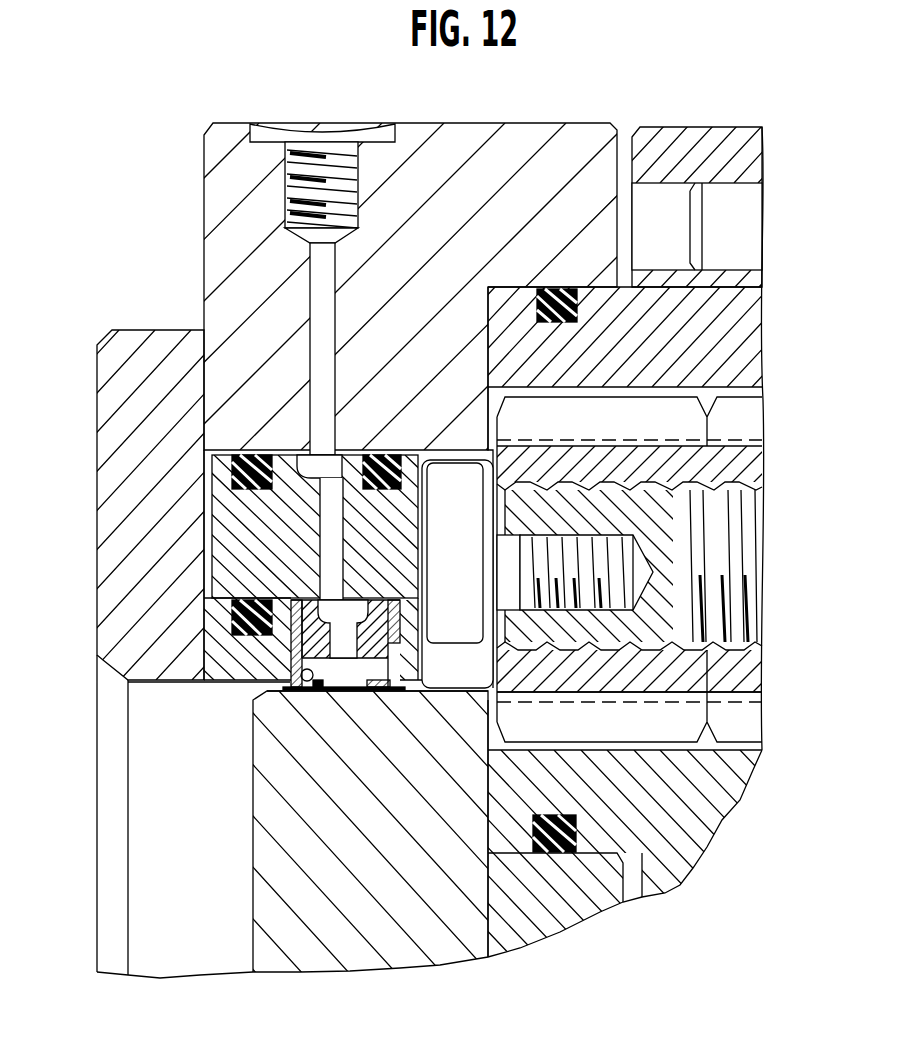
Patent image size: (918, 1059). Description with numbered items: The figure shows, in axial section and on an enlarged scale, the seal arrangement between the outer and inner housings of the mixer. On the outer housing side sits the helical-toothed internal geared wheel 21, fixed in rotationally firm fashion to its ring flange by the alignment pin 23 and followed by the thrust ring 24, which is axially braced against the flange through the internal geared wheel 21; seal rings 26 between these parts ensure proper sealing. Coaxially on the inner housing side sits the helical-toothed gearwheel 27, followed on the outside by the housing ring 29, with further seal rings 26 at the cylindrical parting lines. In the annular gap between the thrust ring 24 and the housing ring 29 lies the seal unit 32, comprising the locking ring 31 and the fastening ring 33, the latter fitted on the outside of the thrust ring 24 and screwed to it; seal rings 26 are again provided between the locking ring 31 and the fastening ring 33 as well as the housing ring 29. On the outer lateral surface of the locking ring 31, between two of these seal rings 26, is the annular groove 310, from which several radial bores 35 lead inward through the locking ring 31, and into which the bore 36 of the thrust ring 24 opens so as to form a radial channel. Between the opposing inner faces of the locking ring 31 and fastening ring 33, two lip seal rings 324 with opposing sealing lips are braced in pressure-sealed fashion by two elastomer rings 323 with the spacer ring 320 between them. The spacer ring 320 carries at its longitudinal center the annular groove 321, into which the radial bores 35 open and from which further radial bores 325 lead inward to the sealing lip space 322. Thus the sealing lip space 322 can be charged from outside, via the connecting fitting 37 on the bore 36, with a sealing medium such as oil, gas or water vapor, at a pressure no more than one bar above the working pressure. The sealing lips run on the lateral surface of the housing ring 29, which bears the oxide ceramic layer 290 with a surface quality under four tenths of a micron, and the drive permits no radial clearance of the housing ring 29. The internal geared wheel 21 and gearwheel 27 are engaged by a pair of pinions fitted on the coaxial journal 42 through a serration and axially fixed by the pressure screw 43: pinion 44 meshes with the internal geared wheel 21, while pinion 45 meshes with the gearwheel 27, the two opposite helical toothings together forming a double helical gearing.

The internal geared wheel 21 is at (703, 162).
The alignment pin 23 is at (743, 243).
The thrust ring 24 is at (432, 177).
The seal ring 26 is at (562, 290).
The gearwheel 27 is at (678, 812).
The housing ring 29 is at (298, 890).
The oxide ceramic layer 290 is at (458, 693).
The locking ring 31 is at (235, 555).
The annular groove 310 is at (318, 465).
The seal unit 32 is at (364, 762).
The spacer ring 320 is at (372, 673).
The annular groove 321 is at (352, 608).
The sealing lip space 322 is at (387, 675).
The elastomer ring 323 is at (300, 678).
The lip seal ring 324 is at (303, 690).
The radial bore 325 is at (340, 678).
The fastening ring 33 is at (148, 367).
The radial bore 35 is at (330, 562).
The bore 36 is at (312, 270).
The connecting fitting 37 is at (328, 177).
The coaxial journal 42 is at (742, 547).
The pressure screw 43 is at (474, 498).
The pinion 44 is at (667, 680).
The pinion 45 is at (743, 678).